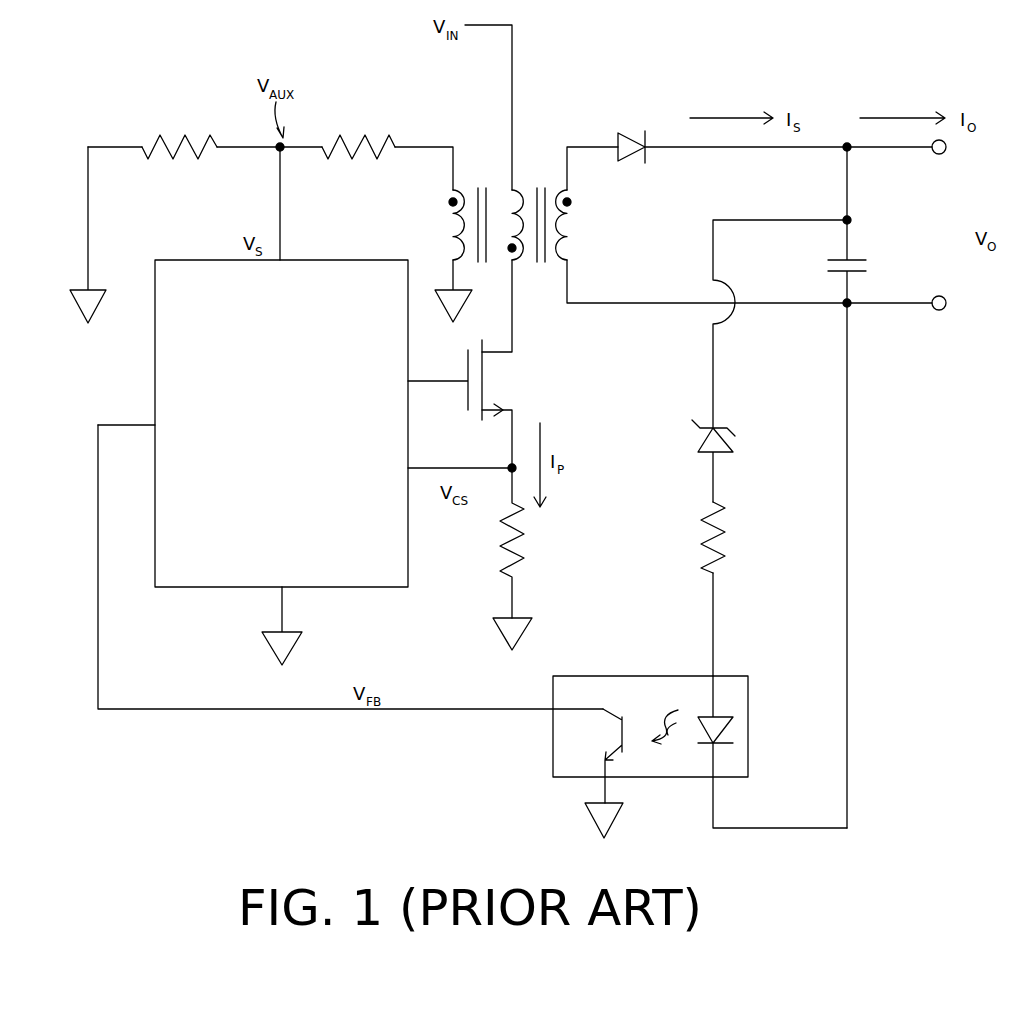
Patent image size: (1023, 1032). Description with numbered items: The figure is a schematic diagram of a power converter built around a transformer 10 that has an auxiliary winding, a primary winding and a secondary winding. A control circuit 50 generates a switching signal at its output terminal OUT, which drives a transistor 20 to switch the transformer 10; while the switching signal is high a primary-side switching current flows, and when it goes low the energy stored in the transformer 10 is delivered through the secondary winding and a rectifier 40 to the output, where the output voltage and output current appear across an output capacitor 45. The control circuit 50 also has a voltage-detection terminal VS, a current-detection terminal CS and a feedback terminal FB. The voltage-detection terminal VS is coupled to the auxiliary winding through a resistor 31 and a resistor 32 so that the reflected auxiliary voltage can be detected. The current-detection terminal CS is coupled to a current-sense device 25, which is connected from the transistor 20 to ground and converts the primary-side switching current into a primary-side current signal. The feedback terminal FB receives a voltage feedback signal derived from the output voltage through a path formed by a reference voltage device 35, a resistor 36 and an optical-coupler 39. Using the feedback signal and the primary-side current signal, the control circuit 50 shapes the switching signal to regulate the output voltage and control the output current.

The transformer 10 is at (520, 192).
The transistor 20 is at (485, 378).
The current-sense device 25 is at (520, 545).
The resistor 31 is at (366, 135).
The resistor 32 is at (186, 135).
The reference voltage device 35 is at (733, 440).
The resistor 36 is at (720, 543).
The optical-coupler 39 is at (730, 677).
The rectifier 40 is at (638, 136).
The output capacitor 45 is at (860, 258).
The control circuit 50 is at (155, 363).